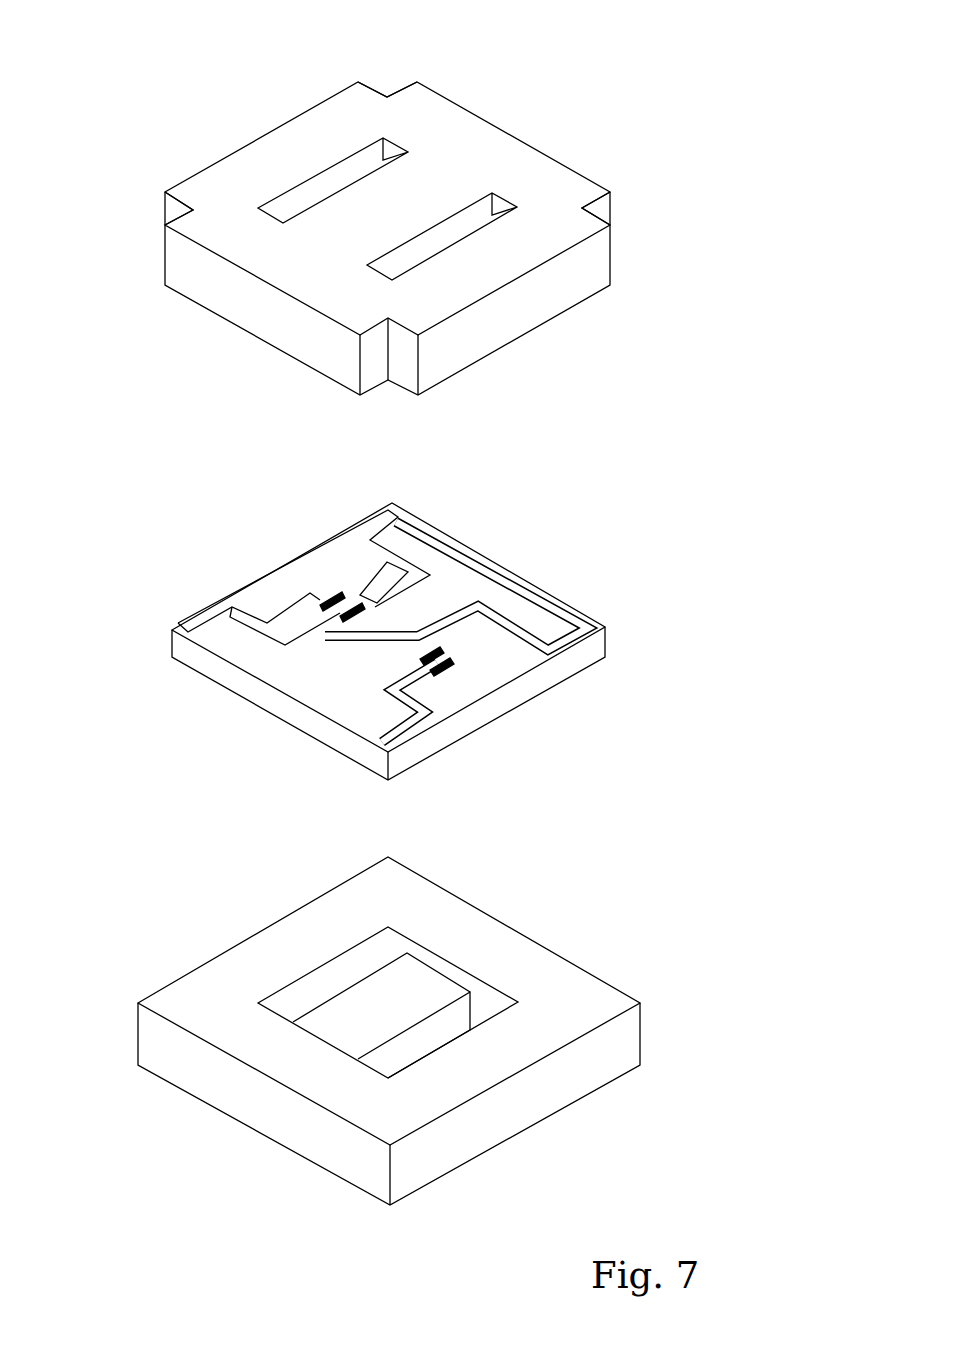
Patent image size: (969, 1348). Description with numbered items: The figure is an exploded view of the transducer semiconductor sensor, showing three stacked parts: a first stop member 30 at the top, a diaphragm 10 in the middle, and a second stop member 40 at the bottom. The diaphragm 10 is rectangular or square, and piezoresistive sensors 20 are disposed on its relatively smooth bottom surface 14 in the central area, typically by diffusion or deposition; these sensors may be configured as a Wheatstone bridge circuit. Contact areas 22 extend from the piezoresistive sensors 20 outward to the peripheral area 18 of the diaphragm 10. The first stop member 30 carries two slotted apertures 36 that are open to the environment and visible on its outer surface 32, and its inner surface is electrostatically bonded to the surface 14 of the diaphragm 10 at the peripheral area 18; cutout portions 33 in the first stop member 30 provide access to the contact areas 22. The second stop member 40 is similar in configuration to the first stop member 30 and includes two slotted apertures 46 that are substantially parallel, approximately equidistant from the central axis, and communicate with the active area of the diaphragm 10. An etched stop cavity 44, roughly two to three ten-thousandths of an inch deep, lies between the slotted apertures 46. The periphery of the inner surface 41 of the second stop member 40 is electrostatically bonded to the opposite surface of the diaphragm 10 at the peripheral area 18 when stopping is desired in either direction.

The diaphragm 10 is at (166, 572).
The bottom surface 14 is at (332, 685).
The peripheral area 18 is at (525, 598).
The piezoresistive sensors 20 is at (450, 658).
The contact areas 22 is at (388, 517).
The first stop member 30 is at (166, 158).
The outer surface 32 is at (482, 171).
The cutout portions 33 is at (388, 62).
The slotted apertures 36 is at (352, 170).
The second stop member 40 is at (156, 926).
The inner surface 41 is at (495, 960).
The stop cavity 44 is at (408, 1015).
The slotted apertures 46 is at (330, 980).